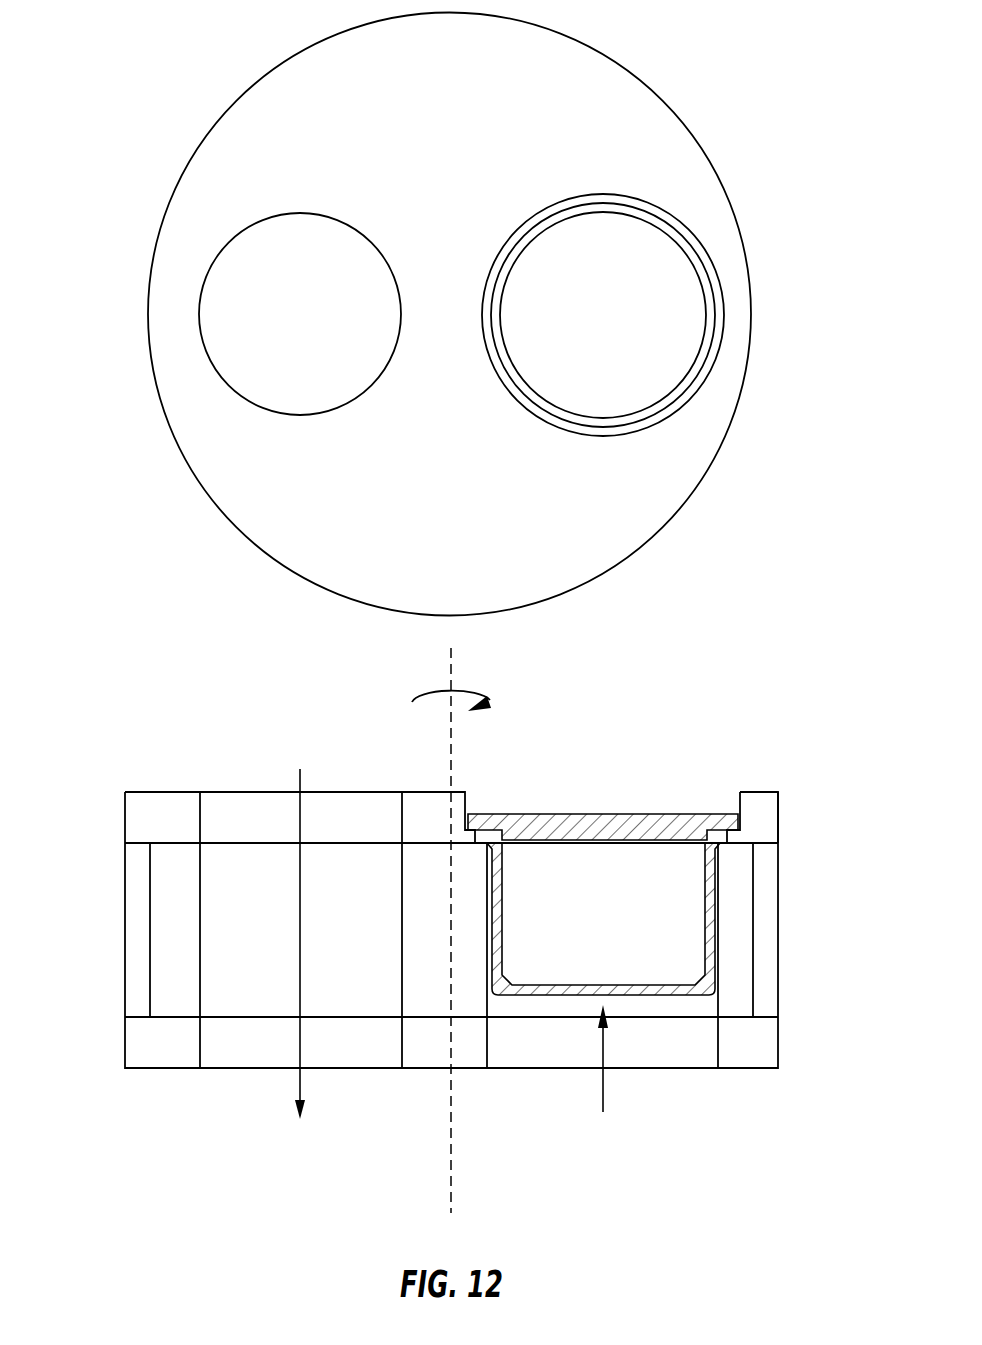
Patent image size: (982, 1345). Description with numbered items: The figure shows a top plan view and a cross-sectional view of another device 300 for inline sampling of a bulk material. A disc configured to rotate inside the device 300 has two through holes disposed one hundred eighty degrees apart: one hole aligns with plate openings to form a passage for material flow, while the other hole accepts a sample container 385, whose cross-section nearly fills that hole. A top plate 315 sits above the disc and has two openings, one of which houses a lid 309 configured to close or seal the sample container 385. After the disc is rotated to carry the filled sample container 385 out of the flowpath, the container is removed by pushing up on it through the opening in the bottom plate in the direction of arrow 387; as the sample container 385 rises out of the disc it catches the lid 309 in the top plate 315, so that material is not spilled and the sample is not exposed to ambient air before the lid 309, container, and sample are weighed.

The device 300 is at (199, 48).
The lid 309 is at (732, 822).
The top plate 315 is at (780, 820).
The sample container 385 is at (710, 968).
The arrow 387 is at (603, 1087).